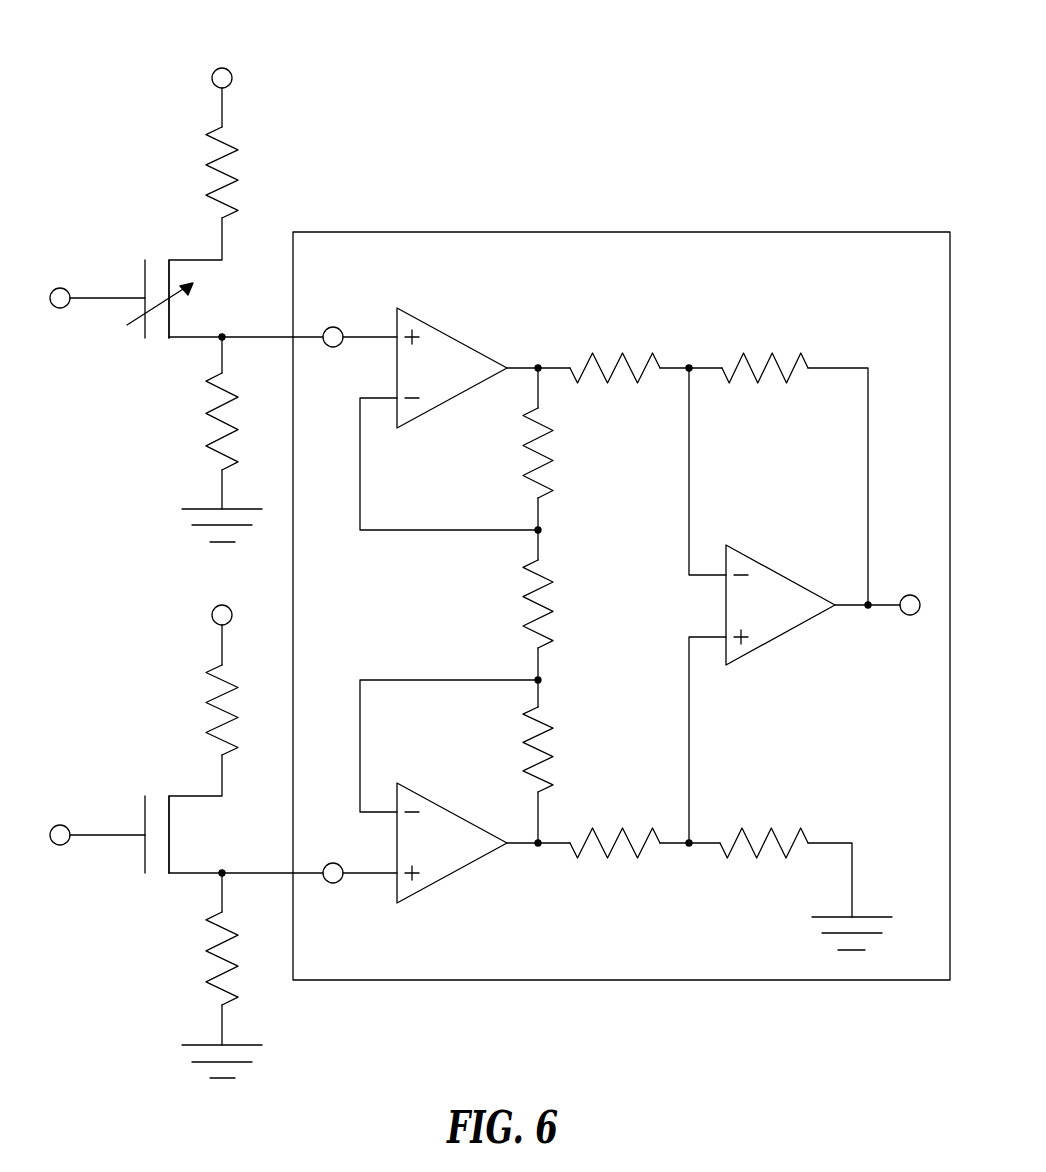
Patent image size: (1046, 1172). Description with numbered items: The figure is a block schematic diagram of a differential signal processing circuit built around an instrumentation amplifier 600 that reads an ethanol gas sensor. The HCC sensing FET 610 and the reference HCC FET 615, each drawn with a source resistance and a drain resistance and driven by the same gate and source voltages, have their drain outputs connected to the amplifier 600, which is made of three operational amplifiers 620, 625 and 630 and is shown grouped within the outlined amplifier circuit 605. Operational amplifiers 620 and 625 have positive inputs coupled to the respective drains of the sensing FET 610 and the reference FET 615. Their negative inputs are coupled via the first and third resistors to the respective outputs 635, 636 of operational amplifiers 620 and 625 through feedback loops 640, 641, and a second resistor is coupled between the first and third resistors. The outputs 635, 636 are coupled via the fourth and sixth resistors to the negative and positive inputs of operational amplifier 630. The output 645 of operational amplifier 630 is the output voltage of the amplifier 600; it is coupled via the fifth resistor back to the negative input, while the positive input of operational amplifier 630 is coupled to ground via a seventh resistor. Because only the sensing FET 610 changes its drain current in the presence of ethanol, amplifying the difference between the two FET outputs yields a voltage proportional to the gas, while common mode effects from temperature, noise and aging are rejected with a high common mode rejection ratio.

The instrumentation amplifier 600 is at (498, 550).
The amplifier circuit 605 is at (621, 588).
The HCC sensing FET 610 is at (150, 280).
The reference HCC FET 615 is at (139, 818).
The operational amplifier 620 is at (453, 372).
The operational amplifier 625 is at (453, 841).
The operational amplifier 630 is at (783, 604).
The output 635 is at (525, 343).
The output 636 is at (523, 869).
The feedback loop 640 is at (450, 465).
The feedback loop 641 is at (450, 720).
The output 645 is at (851, 631).